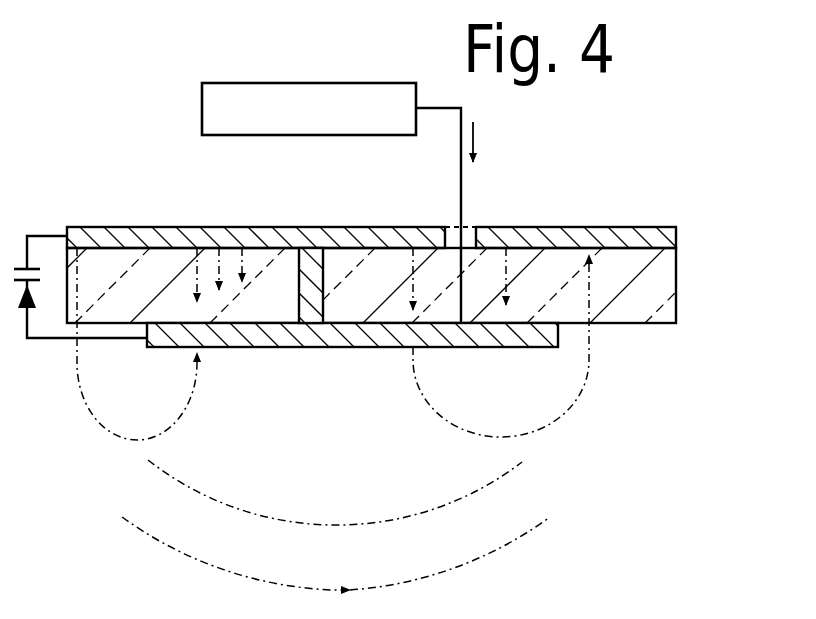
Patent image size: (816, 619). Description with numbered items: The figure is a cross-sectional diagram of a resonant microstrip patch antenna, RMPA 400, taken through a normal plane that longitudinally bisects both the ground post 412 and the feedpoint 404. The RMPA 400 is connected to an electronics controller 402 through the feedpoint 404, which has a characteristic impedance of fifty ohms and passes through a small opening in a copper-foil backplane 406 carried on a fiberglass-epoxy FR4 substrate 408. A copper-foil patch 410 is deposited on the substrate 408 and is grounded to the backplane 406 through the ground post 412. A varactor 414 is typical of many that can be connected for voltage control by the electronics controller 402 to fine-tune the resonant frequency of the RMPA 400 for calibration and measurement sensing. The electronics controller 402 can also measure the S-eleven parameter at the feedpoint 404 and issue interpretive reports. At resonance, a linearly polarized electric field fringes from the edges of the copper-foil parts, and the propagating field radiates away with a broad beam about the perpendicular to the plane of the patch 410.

The RMPA 400 is at (155, 168).
The electronics controller 402 is at (305, 84).
The feedpoint 404 is at (462, 220).
The backplane 406 is at (278, 225).
The substrate 408 is at (614, 319).
The patch 410 is at (455, 345).
The ground post 412 is at (298, 297).
The varactor 414 is at (22, 308).